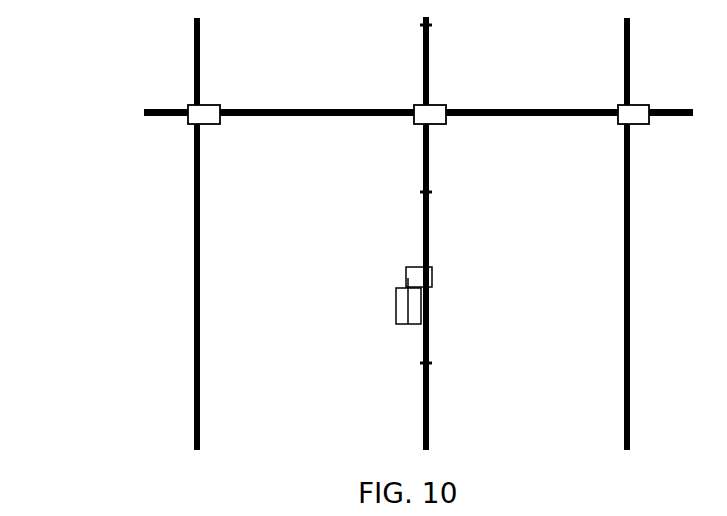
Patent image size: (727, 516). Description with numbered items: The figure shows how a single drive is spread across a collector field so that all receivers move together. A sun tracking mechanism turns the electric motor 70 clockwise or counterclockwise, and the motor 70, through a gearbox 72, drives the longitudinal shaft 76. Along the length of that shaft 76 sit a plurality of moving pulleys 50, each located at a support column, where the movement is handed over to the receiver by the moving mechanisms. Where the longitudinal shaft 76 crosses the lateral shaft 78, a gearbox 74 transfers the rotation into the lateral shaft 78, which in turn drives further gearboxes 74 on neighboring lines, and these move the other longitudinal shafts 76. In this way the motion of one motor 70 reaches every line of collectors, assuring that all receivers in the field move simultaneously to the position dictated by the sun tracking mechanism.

The moving pulley 50 is at (430, 27).
The electric motor 70 is at (406, 306).
The gearbox 72 is at (411, 270).
The gearbox 74 is at (194, 107).
The longitudinal shaft 76 is at (428, 408).
The lateral shaft 78 is at (368, 110).